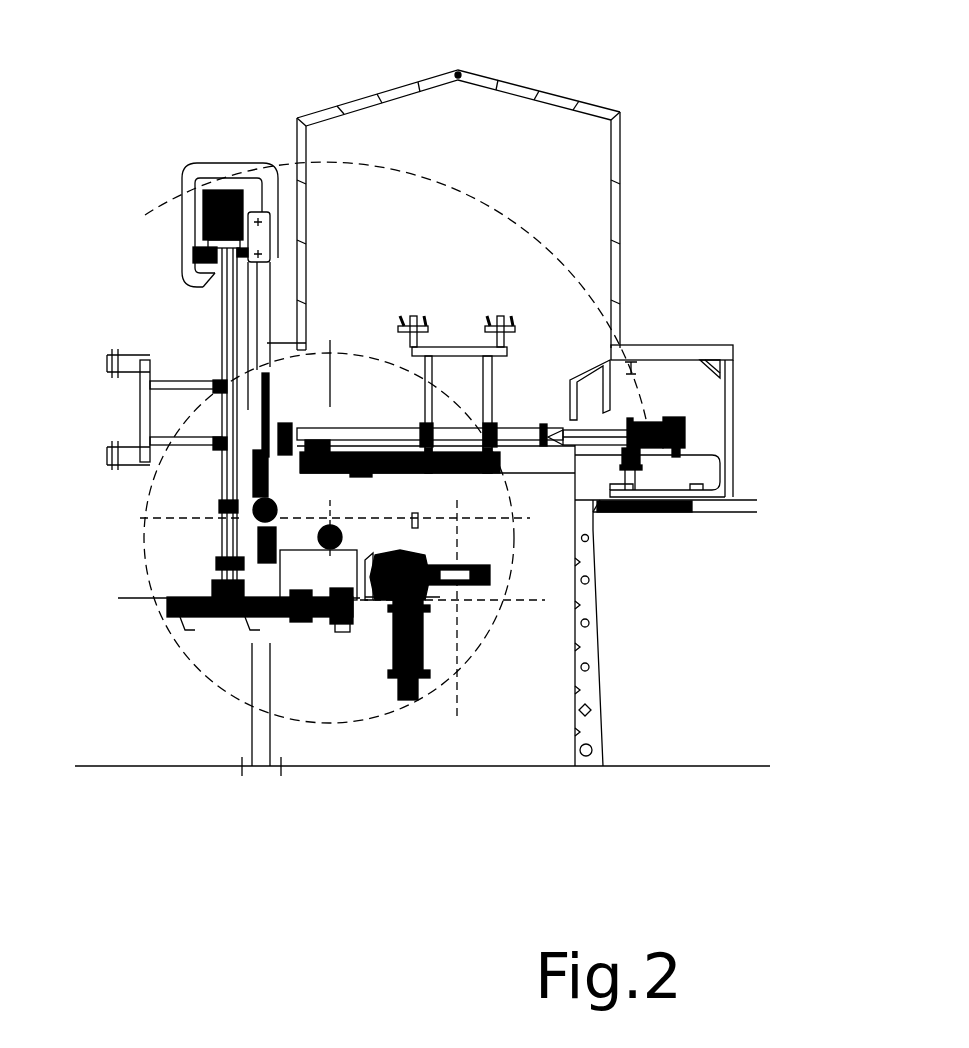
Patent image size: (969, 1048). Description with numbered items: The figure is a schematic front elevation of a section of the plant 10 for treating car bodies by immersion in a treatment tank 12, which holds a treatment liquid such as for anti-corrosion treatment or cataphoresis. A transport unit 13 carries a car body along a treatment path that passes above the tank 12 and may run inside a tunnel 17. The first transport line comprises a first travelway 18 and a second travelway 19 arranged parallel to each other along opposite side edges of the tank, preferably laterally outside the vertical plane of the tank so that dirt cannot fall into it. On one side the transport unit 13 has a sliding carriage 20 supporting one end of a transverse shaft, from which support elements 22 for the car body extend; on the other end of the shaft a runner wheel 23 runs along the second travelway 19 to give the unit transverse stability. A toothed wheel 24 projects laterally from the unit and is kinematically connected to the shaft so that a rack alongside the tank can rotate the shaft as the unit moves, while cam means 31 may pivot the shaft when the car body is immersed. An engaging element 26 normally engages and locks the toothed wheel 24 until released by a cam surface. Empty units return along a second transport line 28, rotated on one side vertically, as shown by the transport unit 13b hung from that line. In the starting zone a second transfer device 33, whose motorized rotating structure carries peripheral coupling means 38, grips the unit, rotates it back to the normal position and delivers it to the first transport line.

The plant 10 is at (648, 67).
The treatment tank 12 is at (577, 560).
The transport unit 13 is at (513, 398).
The transport unit 13b is at (197, 329).
The tunnel 17 is at (508, 78).
The first travelway 18 is at (647, 470).
The second travelway 19 is at (262, 505).
The sliding carriage 20 is at (648, 425).
The support elements 22 is at (493, 308).
The runner wheel 23 is at (317, 420).
The toothed wheel 24 is at (683, 448).
The engaging element 26 is at (682, 412).
The second transport line 28 is at (174, 161).
The cam means 31 is at (287, 417).
The second transfer device 33 is at (350, 638).
The coupling means 38 is at (258, 478).